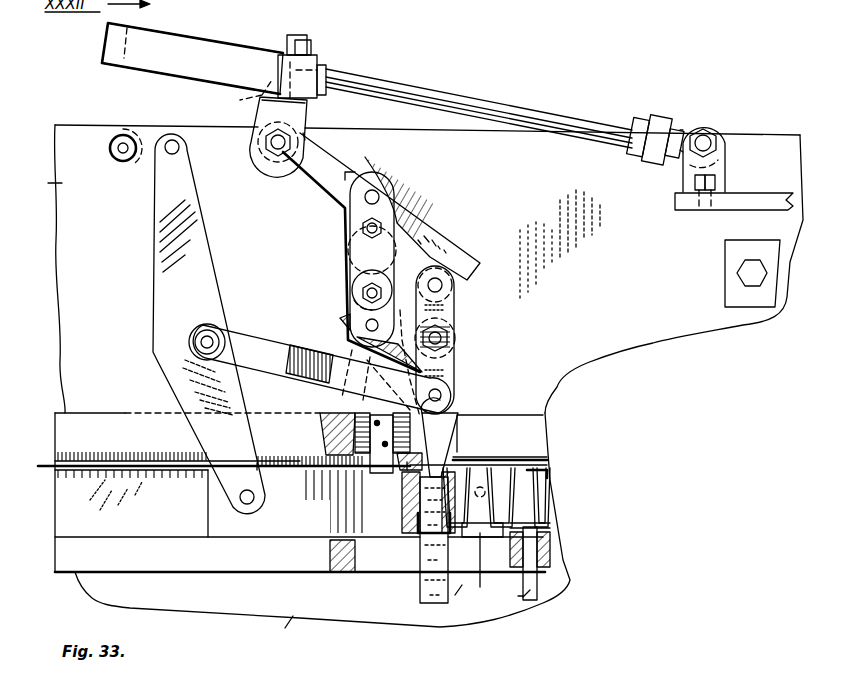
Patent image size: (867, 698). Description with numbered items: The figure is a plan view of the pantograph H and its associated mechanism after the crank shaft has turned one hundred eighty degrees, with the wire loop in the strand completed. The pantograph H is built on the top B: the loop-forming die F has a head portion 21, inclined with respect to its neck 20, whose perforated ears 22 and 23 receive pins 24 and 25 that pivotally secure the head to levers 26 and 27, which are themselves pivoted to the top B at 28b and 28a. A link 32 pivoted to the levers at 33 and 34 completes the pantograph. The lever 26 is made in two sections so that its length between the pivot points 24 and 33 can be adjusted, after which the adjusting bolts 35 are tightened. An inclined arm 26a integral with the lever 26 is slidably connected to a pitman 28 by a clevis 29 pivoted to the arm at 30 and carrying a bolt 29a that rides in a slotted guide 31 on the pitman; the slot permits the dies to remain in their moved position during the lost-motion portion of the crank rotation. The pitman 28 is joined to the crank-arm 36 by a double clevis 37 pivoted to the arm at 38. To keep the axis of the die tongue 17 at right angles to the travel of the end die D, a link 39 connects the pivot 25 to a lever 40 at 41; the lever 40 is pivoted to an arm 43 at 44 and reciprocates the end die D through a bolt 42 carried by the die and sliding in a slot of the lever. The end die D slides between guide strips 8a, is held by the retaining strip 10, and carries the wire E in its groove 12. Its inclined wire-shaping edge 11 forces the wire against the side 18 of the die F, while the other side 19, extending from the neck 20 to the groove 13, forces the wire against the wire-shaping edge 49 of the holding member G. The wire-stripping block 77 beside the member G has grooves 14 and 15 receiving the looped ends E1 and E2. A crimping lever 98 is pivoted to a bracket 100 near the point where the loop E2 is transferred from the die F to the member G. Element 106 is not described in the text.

The top B is at (418, 384).
The slotted guide 31 is at (212, 50).
The clevis 29 is at (302, 118).
The bolt 29a is at (243, 96).
The pivot 30 is at (272, 152).
The pitman 28 is at (480, 103).
The double clevis 37 is at (664, 153).
The crank-arm 36 is at (742, 193).
The pivot 38 is at (696, 207).
The lever 40 is at (210, 276).
The pivot 44 is at (180, 147).
The arm 43 is at (148, 160).
The bolt 42 is at (246, 505).
The pivot 41 is at (212, 338).
The link 39 is at (266, 372).
The ear 23 is at (456, 371).
The pivot 34 is at (440, 282).
The lever 27 is at (453, 306).
The pivot 28a is at (452, 339).
The pin 25 is at (442, 397).
The link 32 is at (457, 242).
The pantograph H is at (434, 212).
The pivot 33 is at (378, 193).
The arm 26a is at (322, 184).
The pivot 28b is at (348, 258).
The adjusting bolts 35 is at (360, 228).
The lever 26 is at (350, 292).
The ear 22 is at (356, 312).
The pin 24 is at (364, 326).
The head portion 21 is at (389, 360).
The retaining strip 10 is at (118, 420).
The guide strips 8a is at (296, 567).
The wire E is at (42, 468).
The end die D is at (210, 490).
The wire-receiving groove 12 is at (278, 464).
The block 106 is at (382, 474).
The wire-shaping edge 11 is at (402, 503).
The neck 20 is at (445, 428).
The groove 13 is at (424, 532).
The wire-shaping side 18 is at (418, 520).
The wire-shaping edge 49 is at (452, 470).
The wire-stripping block 77 is at (548, 461).
The groove 14 is at (540, 476).
The looped end E1 is at (504, 466).
The wire-shaping side 19 is at (479, 502).
The groove 15 is at (512, 520).
The wire strand holding member G is at (550, 504).
The loop-forming die F is at (449, 548).
The looped end E2 is at (485, 543).
The tongue 17 is at (460, 589).
The crimping lever 98 is at (522, 571).
The bracket 100 is at (553, 560).